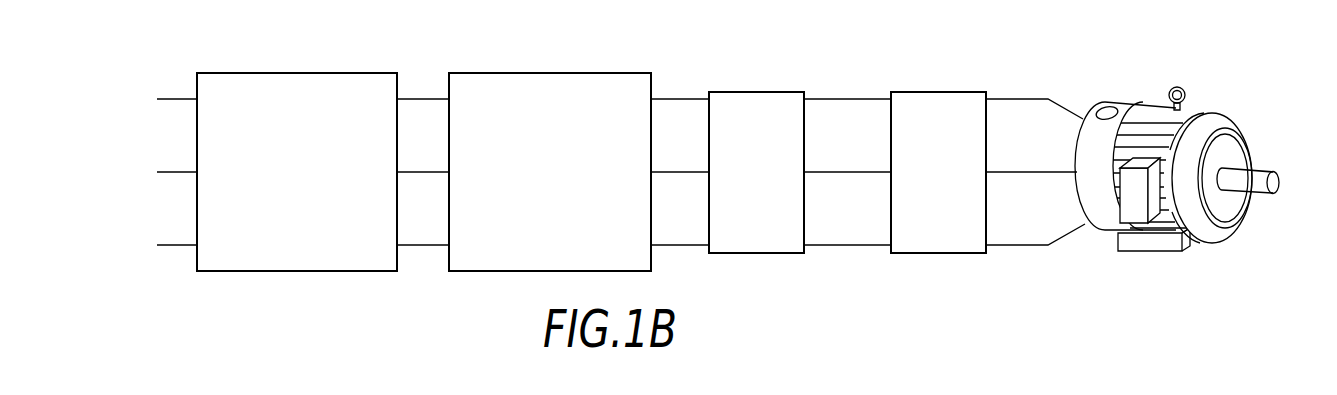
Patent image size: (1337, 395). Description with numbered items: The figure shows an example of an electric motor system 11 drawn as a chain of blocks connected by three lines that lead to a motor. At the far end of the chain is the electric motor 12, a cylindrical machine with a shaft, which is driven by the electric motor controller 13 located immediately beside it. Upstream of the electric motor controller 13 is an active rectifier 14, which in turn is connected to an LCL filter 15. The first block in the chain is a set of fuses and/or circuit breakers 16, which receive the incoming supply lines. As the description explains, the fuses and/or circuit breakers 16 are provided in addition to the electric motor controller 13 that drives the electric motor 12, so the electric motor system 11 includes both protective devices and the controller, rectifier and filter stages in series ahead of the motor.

The electric motor system 11 is at (1274, 92).
The electric motor 12 is at (1124, 100).
The electric motor controller 13 is at (930, 254).
The active rectifier 14 is at (755, 254).
The LCL filter 15 is at (497, 273).
The fuses and/or circuit breakers 16 is at (213, 273).